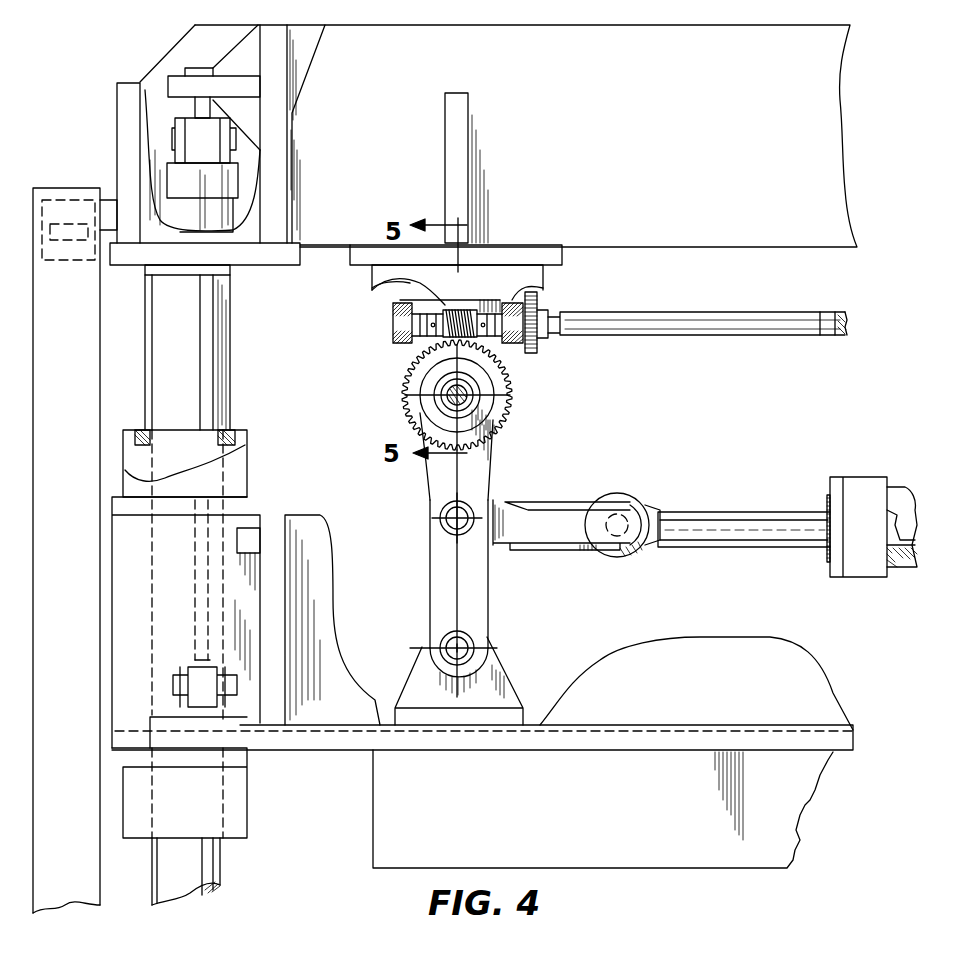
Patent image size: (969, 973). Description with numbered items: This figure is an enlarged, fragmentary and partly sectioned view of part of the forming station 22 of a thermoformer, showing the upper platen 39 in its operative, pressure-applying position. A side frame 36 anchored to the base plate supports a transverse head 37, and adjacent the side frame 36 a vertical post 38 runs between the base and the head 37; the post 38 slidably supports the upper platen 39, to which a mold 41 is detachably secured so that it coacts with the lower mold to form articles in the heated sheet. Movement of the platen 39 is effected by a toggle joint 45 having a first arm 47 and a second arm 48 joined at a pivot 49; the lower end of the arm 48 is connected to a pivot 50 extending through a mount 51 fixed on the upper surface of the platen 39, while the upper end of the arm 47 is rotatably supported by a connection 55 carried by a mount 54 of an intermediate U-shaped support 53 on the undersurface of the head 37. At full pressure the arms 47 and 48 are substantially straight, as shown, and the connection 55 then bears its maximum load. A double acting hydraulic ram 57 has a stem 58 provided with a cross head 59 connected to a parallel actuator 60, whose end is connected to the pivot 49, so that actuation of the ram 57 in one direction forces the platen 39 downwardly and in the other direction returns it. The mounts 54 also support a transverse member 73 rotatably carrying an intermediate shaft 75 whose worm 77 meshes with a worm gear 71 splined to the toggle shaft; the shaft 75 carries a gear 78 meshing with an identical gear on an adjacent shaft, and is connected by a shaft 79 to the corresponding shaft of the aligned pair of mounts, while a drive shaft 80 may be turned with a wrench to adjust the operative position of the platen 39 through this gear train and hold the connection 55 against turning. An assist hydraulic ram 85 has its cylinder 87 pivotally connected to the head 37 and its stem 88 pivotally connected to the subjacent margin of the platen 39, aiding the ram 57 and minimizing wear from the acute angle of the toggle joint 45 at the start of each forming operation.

The forming station 22 is at (340, 808).
The side frame 36 is at (73, 895).
The transverse head 37 is at (810, 198).
The vertical post 38 is at (188, 883).
The upper platen 39 is at (840, 738).
The mold 41 is at (730, 853).
The toggle joint 45 is at (533, 485).
The first arm 47 is at (433, 480).
The second arm 48 is at (480, 592).
The pivot 49 is at (448, 532).
The pivot 50 is at (434, 641).
The mount 51 is at (495, 685).
The U-shaped support 53 is at (510, 272).
The mount 54 is at (478, 297).
The connection 55 is at (480, 383).
The hydraulic ram 57 is at (902, 470).
The stem 58 is at (753, 517).
The cross head 59 is at (627, 505).
The actuator 60 is at (592, 538).
The worm gear 71 is at (410, 387).
The transverse member 73 is at (543, 277).
The intermediate shaft 75 is at (393, 323).
The worm 77 is at (378, 282).
The gear 78 is at (547, 300).
The shaft 79 is at (810, 337).
The drive shaft 80 is at (463, 612).
The hydraulic ram 85 is at (210, 215).
The cylinder 87 is at (236, 345).
The stem 88 is at (200, 537).